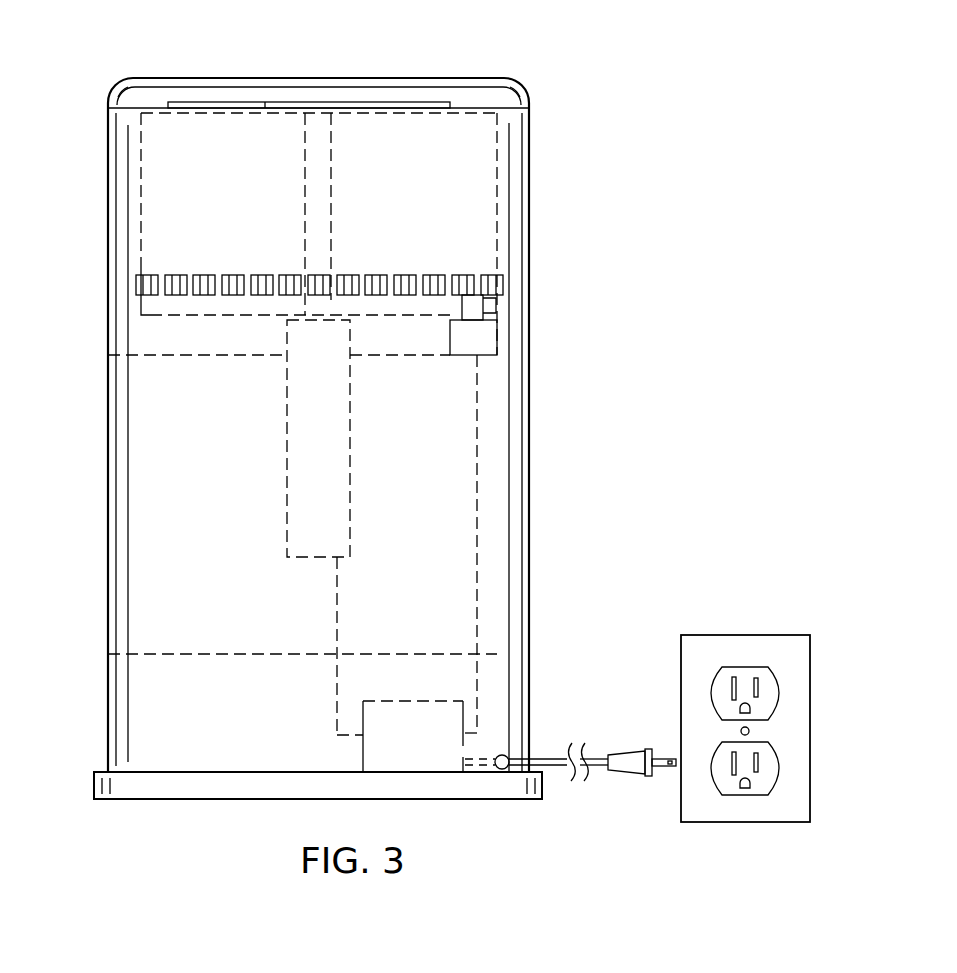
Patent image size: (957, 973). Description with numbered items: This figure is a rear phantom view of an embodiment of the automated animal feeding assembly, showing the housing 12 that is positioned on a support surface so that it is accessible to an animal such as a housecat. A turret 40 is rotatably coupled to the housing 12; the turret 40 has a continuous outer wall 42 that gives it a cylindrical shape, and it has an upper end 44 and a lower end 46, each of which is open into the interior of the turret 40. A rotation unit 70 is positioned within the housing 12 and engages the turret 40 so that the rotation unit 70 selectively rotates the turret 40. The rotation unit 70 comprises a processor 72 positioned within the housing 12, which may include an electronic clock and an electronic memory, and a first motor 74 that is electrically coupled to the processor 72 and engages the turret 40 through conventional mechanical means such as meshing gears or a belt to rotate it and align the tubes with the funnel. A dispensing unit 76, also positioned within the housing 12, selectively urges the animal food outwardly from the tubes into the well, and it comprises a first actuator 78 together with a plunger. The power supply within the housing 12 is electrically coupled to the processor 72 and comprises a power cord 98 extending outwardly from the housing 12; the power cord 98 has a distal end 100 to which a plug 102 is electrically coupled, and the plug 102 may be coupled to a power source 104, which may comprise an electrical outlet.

The housing 12 is at (540, 180).
The turret 40 is at (130, 114).
The outer wall 42 is at (140, 182).
The upper end 44 is at (172, 108).
The lower end 46 is at (150, 317).
The rotation unit 70 is at (510, 335).
The processor 72 is at (463, 743).
The first motor 74 is at (490, 357).
The dispensing unit 76 is at (345, 162).
The first actuator 78 is at (287, 462).
The power cord 98 is at (589, 767).
The distal end 100 is at (606, 755).
The plug 102 is at (636, 773).
The power source 104 is at (737, 640).